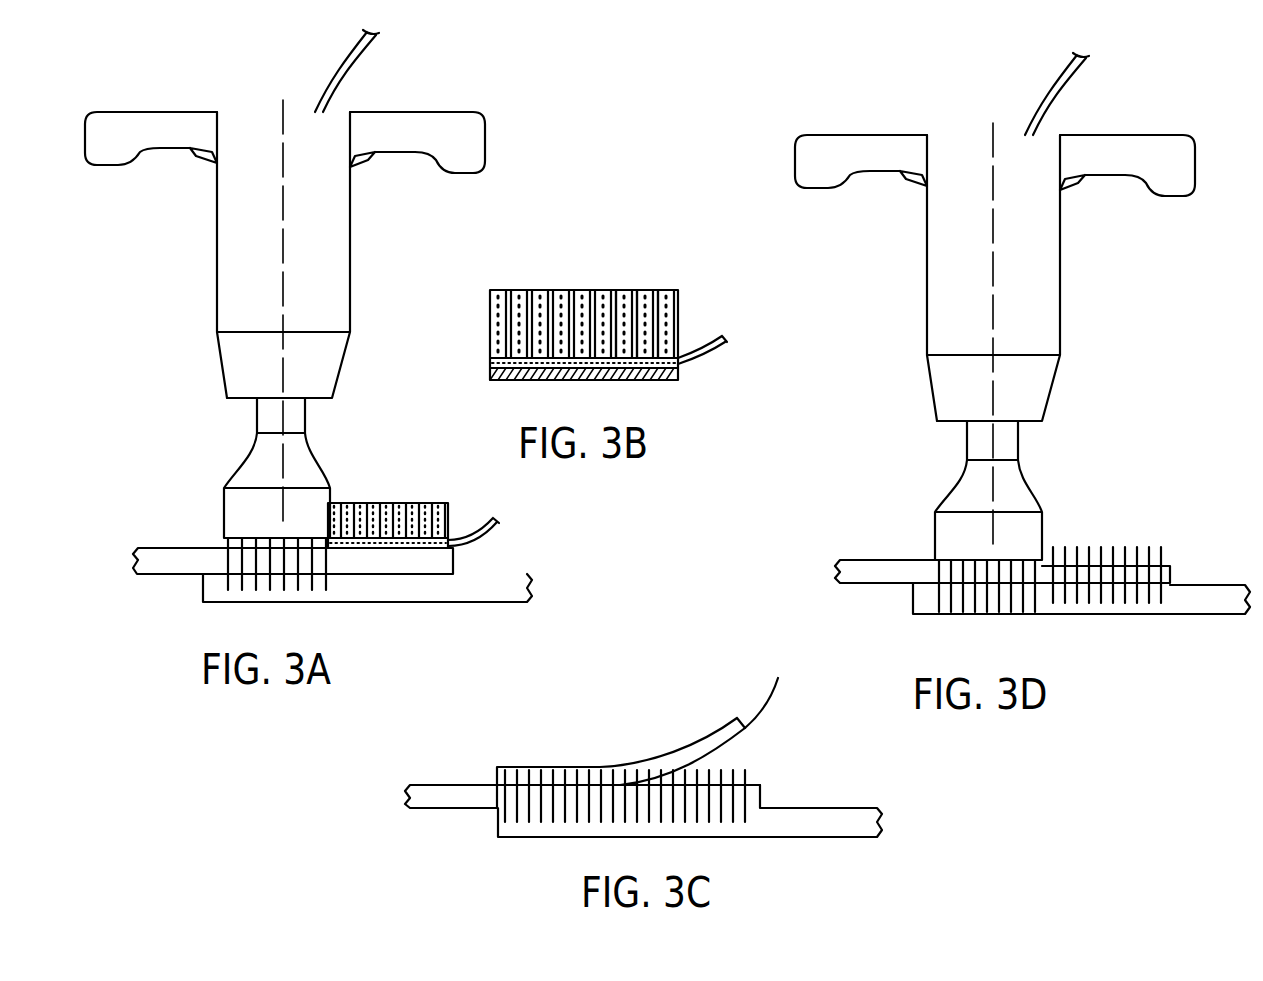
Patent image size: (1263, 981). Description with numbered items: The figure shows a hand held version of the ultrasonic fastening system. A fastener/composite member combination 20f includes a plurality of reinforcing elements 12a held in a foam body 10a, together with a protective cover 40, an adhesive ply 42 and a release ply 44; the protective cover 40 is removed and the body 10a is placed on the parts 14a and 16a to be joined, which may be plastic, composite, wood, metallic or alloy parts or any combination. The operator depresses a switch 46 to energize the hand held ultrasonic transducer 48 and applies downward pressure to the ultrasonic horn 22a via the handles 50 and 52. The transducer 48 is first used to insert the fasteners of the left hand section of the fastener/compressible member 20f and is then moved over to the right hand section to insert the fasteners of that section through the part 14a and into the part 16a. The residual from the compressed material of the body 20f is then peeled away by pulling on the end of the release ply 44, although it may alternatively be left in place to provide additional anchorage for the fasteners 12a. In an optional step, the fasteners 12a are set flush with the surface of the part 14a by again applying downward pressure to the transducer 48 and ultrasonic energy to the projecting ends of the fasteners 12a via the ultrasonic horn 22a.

In FIG. 3B, the foam body 10a is at (543, 290).
In FIG. 3B, the reinforcing elements 12a is at (663, 296).
In FIG. 3C, the reinforcing elements 12a is at (746, 782).
In FIG. 3D, the reinforcing elements 12a is at (1090, 578).
In FIG. 3A, the part 14a is at (178, 565).
In FIG. 3D, the part 14a is at (880, 560).
In FIG. 3A, the part 16a is at (490, 603).
In FIG. 3D, the part 16a is at (1188, 617).
In FIG. 3A, the fastener/composite member combination 20f is at (375, 503).
In FIG. 3B, the fastener/composite member combination 20f is at (562, 308).
In FIG. 3C, the fastener/composite member combination 20f is at (693, 737).
In FIG. 3A, the ultrasonic horn 22a is at (237, 470).
In FIG. 3D, the ultrasonic horn 22a is at (953, 491).
In FIG. 3B, the protective cover 40 is at (597, 383).
In FIG. 3B, the adhesive ply 42 is at (492, 368).
In FIG. 3A, the release ply 44 is at (492, 536).
In FIG. 3B, the release ply 44 is at (702, 357).
In FIG. 3C, the release ply 44 is at (755, 690).
In FIG. 3A, the switch 46 is at (203, 162).
In FIG. 3A, the hand held ultrasonic transducer 48 is at (350, 272).
In FIG. 3D, the hand held ultrasonic transducer 48 is at (1065, 282).
In FIG. 3A, the handle 50 is at (433, 125).
In FIG. 3A, the handle 52 is at (168, 118).